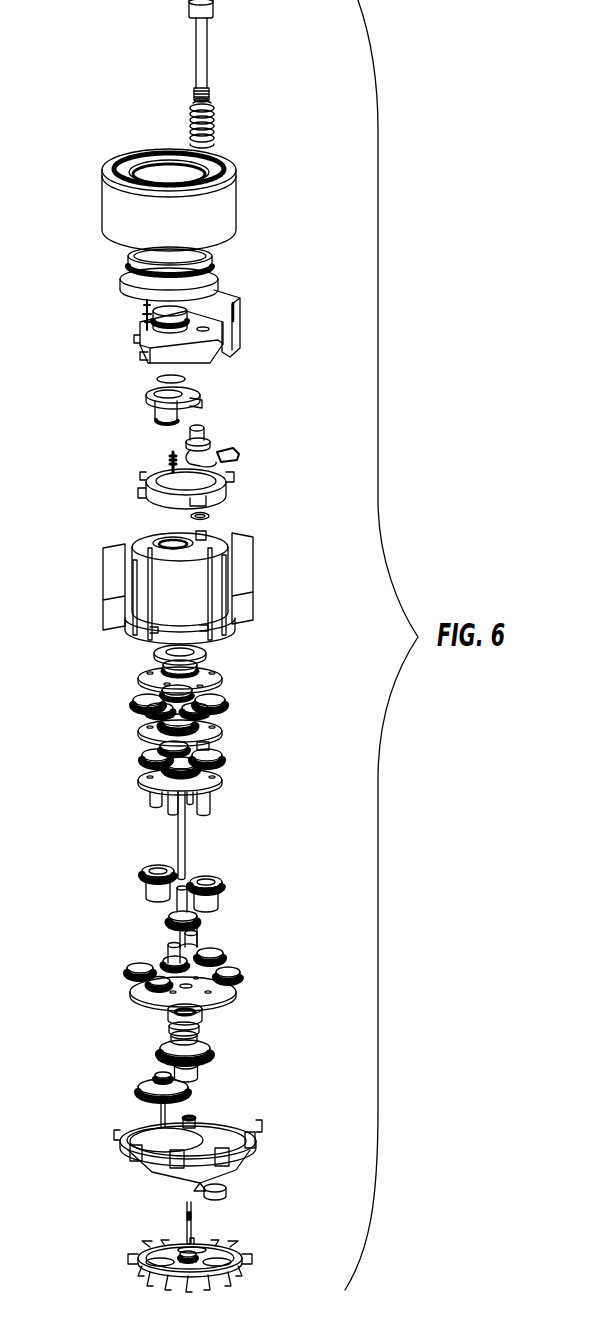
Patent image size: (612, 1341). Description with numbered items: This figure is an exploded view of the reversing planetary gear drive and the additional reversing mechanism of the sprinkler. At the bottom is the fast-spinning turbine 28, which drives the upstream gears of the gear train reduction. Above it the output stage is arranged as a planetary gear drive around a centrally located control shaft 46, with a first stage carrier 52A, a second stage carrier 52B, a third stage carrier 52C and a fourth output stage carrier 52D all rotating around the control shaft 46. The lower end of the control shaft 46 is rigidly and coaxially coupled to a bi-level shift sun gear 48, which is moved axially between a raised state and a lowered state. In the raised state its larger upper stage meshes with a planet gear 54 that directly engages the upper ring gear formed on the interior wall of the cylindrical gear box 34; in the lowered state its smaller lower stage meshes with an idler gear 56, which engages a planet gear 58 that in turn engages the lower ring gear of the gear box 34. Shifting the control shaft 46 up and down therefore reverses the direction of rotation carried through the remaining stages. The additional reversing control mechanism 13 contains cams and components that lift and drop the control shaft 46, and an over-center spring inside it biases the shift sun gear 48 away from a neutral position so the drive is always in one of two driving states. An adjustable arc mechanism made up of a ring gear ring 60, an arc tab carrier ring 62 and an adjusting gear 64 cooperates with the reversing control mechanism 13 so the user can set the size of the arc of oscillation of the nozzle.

The adjusting gear 64 is at (205, 42).
The ring gear ring 60 is at (240, 200).
The arc tab carrier ring 62 is at (216, 268).
The additional reversing control mechanism 13 is at (136, 308).
The gear box 34 is at (222, 545).
The fourth output stage carrier 52D is at (222, 676).
The third stage carrier 52C is at (222, 729).
The second stage carrier 52B is at (222, 779).
The control shaft 46 is at (178, 846).
The planet gear 54 is at (222, 877).
The bi-level shift sun gear 48 is at (198, 918).
The idler gear 56 is at (224, 955).
The planet gear 58 is at (241, 975).
The first stage carrier 52A is at (226, 1000).
The turbine 28 is at (125, 1270).